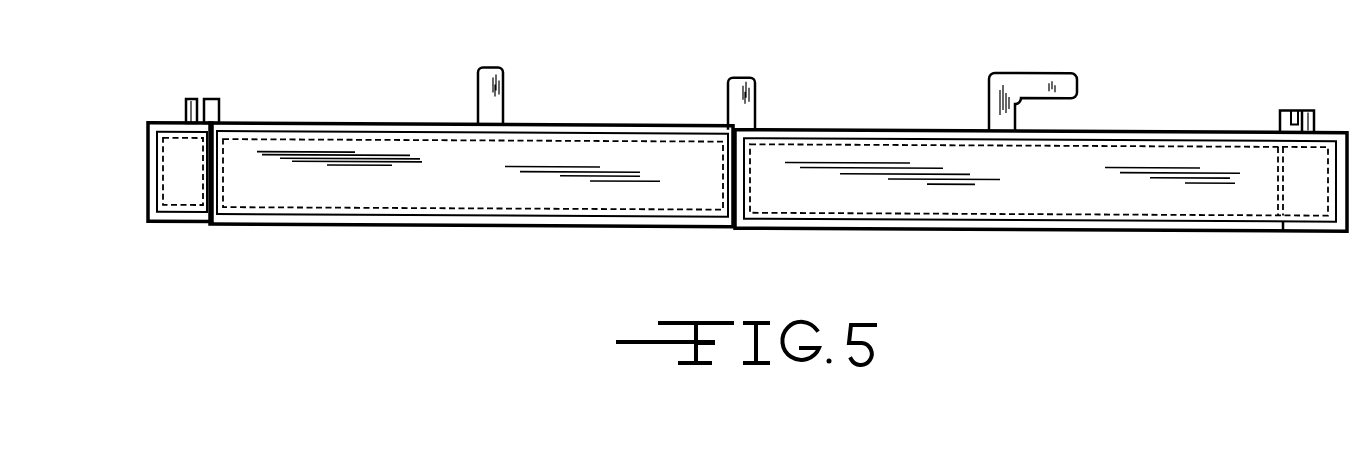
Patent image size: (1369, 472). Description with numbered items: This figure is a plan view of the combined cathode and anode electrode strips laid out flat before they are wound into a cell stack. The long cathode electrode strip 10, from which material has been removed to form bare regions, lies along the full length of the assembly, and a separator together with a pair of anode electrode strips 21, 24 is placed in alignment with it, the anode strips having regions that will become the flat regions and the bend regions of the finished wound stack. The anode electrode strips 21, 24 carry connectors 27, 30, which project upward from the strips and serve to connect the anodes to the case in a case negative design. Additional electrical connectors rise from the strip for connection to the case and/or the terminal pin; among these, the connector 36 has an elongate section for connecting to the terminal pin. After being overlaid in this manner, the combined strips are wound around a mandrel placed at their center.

The cathode electrode strip 10 is at (410, 195).
The anode electrode strip 21 is at (150, 122).
The anode electrode strip 24 is at (1052, 205).
The connector 27 is at (191, 98).
The connector 30 is at (1281, 119).
The electrical connector 36 is at (1003, 88).